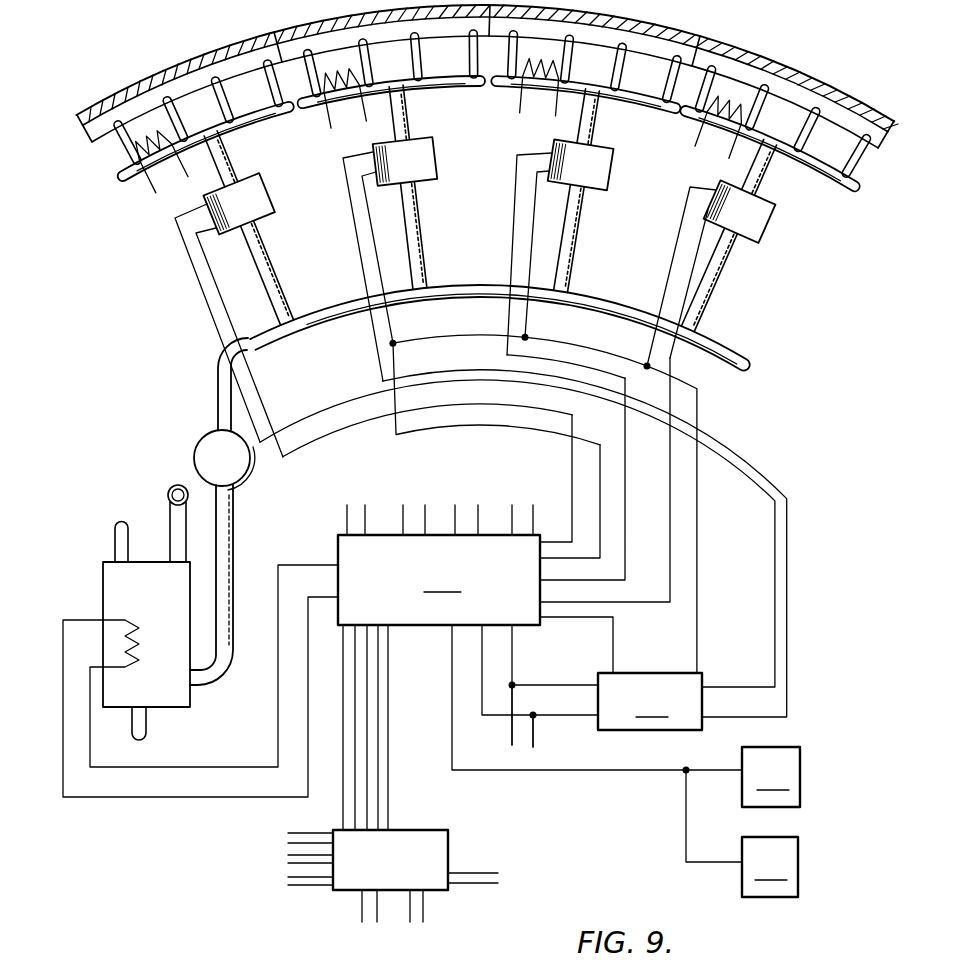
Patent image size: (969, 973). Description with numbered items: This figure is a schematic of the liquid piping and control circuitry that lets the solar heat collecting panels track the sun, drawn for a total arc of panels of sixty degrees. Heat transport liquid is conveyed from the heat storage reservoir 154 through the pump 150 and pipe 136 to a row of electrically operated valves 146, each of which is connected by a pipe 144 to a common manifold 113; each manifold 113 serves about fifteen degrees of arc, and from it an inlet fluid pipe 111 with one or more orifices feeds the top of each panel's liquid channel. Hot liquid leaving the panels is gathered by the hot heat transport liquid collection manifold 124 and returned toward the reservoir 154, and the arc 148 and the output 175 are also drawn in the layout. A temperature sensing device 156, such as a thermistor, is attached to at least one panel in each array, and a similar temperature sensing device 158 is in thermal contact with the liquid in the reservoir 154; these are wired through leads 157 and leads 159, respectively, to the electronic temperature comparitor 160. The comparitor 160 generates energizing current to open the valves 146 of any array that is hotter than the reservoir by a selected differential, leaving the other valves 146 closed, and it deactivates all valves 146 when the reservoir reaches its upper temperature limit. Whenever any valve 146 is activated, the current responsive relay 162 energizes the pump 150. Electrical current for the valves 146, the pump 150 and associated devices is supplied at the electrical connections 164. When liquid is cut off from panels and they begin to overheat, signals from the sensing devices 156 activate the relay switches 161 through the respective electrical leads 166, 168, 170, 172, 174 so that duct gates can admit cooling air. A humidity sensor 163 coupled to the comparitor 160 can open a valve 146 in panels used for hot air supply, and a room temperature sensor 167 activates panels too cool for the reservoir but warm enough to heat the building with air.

The inlet fluid pipe 111 is at (238, 99).
The manifold 113 is at (270, 117).
The hot heat transport liquid collection manifold 124 is at (173, 489).
The pipe 136 is at (236, 540).
The pipes 144 is at (230, 168).
The electrically operated valves 146 is at (263, 200).
The manifold 148 is at (309, 314).
The pump 150 is at (202, 443).
The heat storage reservoir 154 is at (174, 708).
The temperature sensing device 156 is at (123, 174).
The leads 157 is at (153, 184).
The temperature sensing device 158 is at (122, 635).
The leads 159 is at (136, 797).
The electronic temperature comparitor 160 is at (481, 507).
The relay switches 161 is at (426, 832).
The current responsive relay 162 is at (650, 701).
The humidity sensor 163 is at (771, 777).
The electrical connections 164 is at (538, 730).
The electrical leads 166 is at (290, 834).
The room temperature sensor 167 is at (770, 867).
The electrical leads 168 is at (291, 853).
The electrical leads 170 is at (296, 888).
The electrical leads 172 is at (369, 922).
The electrical leads 174 is at (422, 922).
The output 175 is at (488, 876).